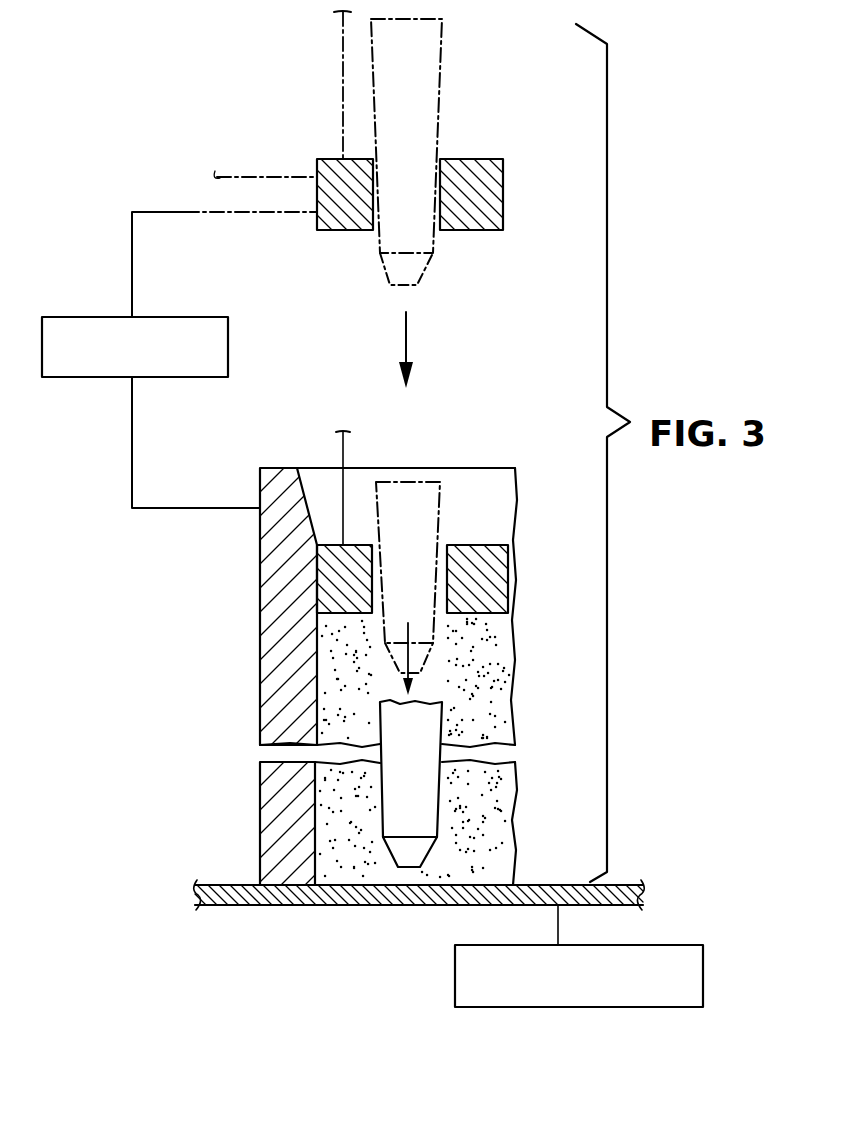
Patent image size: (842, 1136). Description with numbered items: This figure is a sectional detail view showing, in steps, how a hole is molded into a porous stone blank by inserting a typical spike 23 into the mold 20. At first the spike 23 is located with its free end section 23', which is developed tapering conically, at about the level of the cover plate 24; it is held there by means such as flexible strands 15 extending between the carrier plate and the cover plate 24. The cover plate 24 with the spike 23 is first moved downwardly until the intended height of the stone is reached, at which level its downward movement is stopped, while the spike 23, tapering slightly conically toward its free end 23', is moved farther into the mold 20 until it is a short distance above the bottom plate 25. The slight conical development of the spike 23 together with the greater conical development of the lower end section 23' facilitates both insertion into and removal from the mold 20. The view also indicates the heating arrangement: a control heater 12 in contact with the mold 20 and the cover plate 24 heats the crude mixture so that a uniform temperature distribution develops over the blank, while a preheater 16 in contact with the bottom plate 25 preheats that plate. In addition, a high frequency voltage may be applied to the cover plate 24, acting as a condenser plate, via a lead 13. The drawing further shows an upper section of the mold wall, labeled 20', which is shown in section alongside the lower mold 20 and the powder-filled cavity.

The control heater 12 is at (78, 316).
The lead 13 is at (317, 177).
The flexible strand 15 is at (340, 42).
The preheater 16 is at (626, 1008).
The mold 20 is at (330, 822).
The upper mold section 20' is at (343, 607).
The spike 23 is at (439, 428).
The free end section 23' is at (441, 565).
The cover plate 24 is at (485, 165).
The bottom plate 25 is at (233, 896).